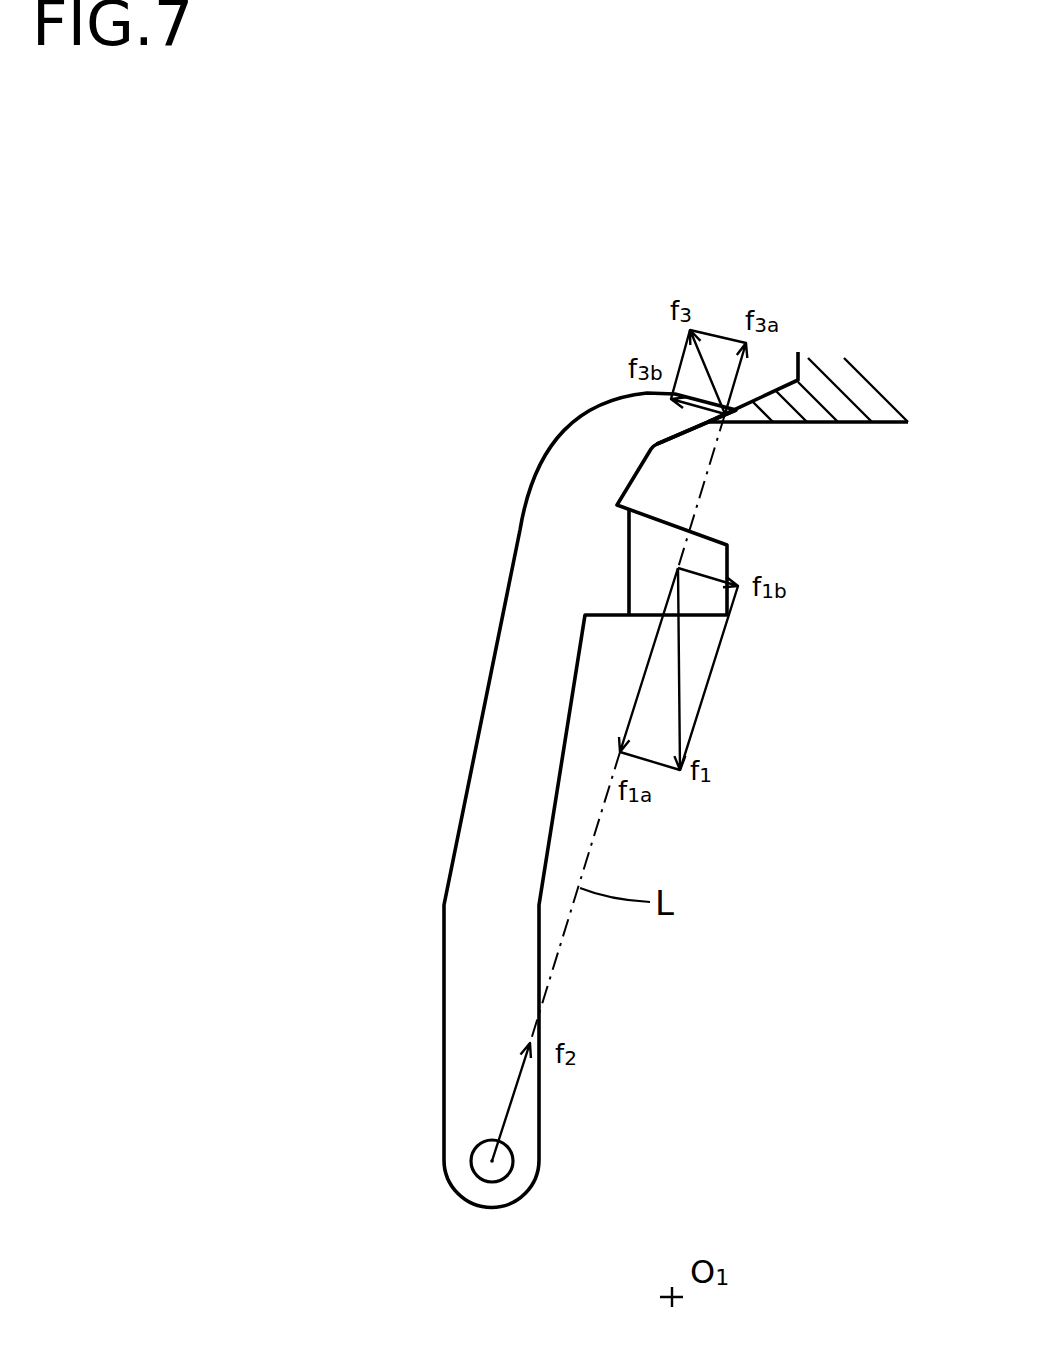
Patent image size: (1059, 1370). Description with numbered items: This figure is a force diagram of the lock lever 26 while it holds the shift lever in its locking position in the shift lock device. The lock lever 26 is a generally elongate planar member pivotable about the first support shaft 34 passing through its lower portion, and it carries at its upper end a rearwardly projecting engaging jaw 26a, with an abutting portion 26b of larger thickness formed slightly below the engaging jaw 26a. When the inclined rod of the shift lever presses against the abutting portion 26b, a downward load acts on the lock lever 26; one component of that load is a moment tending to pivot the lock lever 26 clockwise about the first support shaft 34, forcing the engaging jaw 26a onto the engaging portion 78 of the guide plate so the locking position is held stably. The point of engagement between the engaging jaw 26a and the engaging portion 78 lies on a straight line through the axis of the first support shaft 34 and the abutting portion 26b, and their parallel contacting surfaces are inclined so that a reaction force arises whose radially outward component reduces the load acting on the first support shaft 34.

The lock lever 26 is at (488, 492).
The engaging jaw 26a is at (673, 420).
The abutting portion 26b is at (706, 605).
The first support shaft 34 is at (483, 1173).
The engaging portion 78 is at (780, 410).